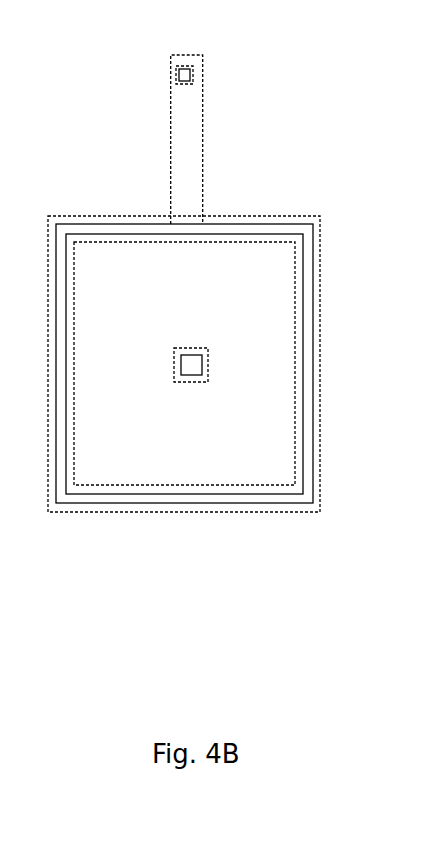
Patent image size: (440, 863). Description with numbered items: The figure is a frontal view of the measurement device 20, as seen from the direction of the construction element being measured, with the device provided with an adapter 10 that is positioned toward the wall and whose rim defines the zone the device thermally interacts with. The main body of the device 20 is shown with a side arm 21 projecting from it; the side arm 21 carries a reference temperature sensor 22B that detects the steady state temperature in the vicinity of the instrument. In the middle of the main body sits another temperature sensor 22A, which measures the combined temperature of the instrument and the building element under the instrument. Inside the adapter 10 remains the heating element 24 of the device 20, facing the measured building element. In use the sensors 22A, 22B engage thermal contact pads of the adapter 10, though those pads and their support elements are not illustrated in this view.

The adapter 10 is at (52, 507).
The measurement device 20 is at (145, 503).
The side arm 21 is at (190, 165).
The first temperature sensor 22A is at (190, 373).
The second temperature sensor 22B is at (193, 78).
The heating element 24 is at (303, 280).